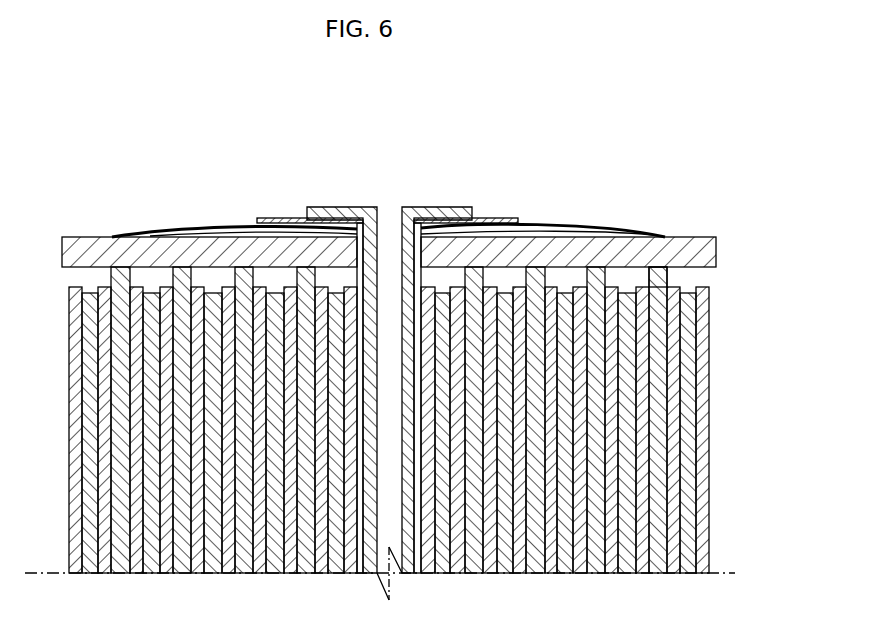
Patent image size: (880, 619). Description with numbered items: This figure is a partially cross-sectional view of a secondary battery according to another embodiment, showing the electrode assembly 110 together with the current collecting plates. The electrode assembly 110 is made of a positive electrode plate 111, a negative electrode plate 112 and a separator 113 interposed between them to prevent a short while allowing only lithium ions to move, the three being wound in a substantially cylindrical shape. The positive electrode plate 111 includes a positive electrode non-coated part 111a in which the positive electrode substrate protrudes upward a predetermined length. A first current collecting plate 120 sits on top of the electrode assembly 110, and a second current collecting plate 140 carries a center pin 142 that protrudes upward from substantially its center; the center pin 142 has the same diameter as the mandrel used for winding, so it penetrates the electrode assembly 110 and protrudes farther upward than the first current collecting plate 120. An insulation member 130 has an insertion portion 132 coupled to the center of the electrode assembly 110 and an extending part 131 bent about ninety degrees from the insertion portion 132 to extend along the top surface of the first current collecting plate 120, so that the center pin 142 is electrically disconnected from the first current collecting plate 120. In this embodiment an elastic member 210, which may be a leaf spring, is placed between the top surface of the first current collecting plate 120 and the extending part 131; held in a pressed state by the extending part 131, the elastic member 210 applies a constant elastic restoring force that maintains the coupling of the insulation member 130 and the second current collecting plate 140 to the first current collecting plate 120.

The electrode assembly 110 is at (617, 420).
The positive electrode plate 111 is at (664, 330).
The positive electrode non-coated part 111a is at (676, 277).
The negative electrode plate 112 is at (685, 530).
The separator 113 is at (672, 420).
The first current collecting plate 120 is at (92, 247).
The insulation member 130 is at (462, 339).
The extending part 131 is at (442, 219).
The insertion portion 132 is at (487, 237).
The second current collecting plate 140 is at (410, 473).
The center pin 142 is at (322, 213).
The elastic member 210 is at (582, 228).